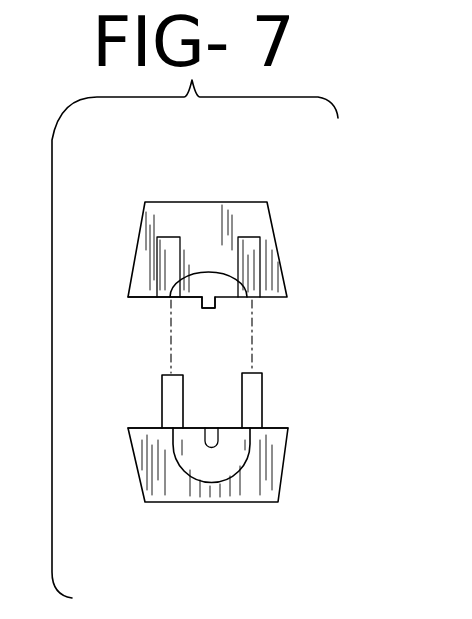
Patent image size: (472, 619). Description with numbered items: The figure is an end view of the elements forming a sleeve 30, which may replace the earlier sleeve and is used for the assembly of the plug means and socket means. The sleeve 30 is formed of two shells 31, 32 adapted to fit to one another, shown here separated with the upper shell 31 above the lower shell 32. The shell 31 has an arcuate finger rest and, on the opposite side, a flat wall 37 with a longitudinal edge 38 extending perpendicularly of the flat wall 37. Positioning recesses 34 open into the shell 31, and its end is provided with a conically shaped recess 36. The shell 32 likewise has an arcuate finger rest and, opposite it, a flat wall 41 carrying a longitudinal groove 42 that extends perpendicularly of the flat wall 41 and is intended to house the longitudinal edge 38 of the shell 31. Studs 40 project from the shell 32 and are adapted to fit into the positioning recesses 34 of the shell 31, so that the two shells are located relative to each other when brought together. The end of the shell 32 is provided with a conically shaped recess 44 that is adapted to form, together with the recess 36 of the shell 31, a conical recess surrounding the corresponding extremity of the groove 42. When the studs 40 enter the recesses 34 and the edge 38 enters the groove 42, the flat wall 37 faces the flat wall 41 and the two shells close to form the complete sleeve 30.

The sleeve 30 is at (289, 212).
The shell 31 is at (158, 202).
The shell 32 is at (213, 502).
The positioning recesses 34 is at (180, 247).
The conically shaped recess 36 is at (222, 265).
The flat wall 37 is at (140, 300).
The longitudinal edge 38 is at (215, 305).
The studs 40 is at (163, 376).
The flat wall 41 is at (140, 428).
The longitudinal groove 42 is at (213, 437).
The conically shaped recess 44 is at (192, 455).